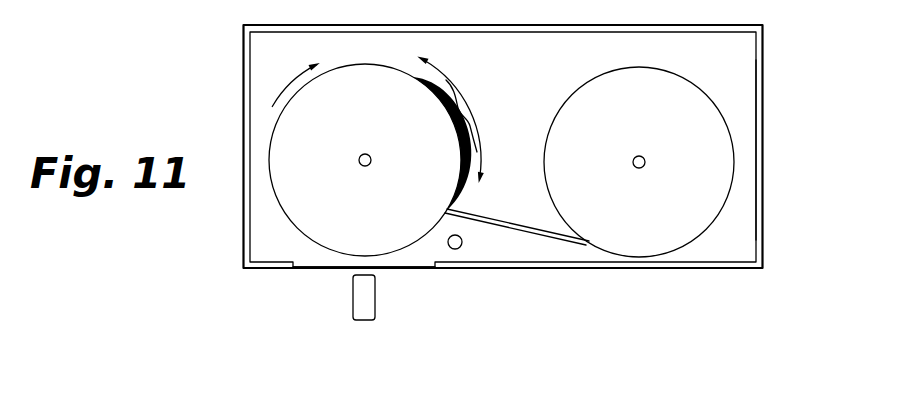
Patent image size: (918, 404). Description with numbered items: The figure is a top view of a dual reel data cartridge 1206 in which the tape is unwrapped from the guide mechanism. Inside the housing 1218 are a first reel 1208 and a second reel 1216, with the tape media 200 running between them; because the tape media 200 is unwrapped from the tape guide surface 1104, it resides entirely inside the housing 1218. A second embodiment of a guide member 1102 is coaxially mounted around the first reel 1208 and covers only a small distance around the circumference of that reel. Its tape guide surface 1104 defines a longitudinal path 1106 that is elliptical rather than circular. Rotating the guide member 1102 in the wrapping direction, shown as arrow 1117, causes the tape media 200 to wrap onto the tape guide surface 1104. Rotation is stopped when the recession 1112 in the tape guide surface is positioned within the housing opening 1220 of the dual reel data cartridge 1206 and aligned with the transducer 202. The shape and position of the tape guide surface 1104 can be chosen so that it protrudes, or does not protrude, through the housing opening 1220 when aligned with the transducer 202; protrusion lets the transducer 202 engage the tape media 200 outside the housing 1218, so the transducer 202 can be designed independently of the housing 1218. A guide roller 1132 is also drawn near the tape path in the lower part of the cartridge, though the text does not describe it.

The dual reel data cartridge 1206 is at (786, 144).
The housing 1218 is at (754, 188).
The first reel 1208 is at (387, 231).
The second reel 1216 is at (662, 222).
The tape media 200 is at (502, 222).
The arrow 1117 is at (292, 80).
The longitudinal path 1106 is at (472, 88).
The tape guide surface 1104 is at (441, 84).
The guide member 1102 is at (448, 95).
The recession 1112 is at (462, 126).
The tape guide roller 1132 is at (455, 249).
The transducer 202 is at (362, 320).
The housing opening 1220 is at (333, 274).